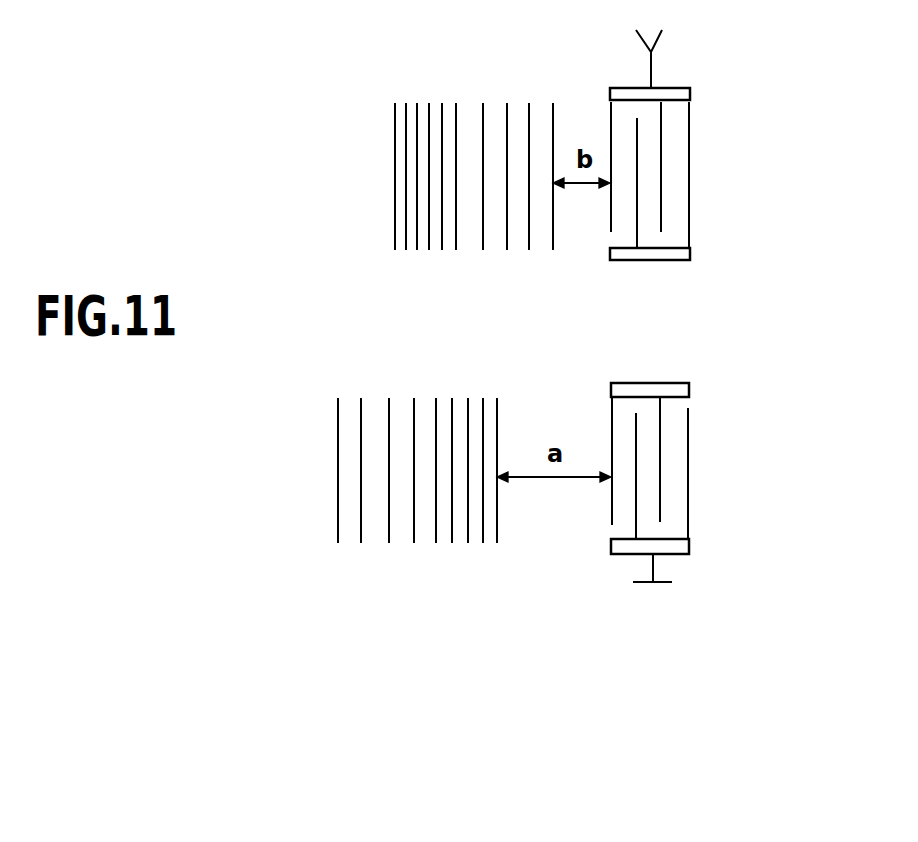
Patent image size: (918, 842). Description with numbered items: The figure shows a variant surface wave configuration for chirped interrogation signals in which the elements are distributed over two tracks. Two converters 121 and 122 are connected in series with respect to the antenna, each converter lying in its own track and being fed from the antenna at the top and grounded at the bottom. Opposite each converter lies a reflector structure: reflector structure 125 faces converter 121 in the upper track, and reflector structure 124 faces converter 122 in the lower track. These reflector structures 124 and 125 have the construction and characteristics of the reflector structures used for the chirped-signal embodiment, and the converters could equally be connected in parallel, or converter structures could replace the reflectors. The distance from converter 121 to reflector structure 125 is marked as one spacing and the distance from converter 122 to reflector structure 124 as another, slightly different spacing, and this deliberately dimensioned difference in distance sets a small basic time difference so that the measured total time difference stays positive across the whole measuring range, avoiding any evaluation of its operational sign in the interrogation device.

The converter 121 is at (690, 254).
The converter 122 is at (688, 547).
The reflector structure 124 is at (417, 550).
The reflector structure 125 is at (532, 257).